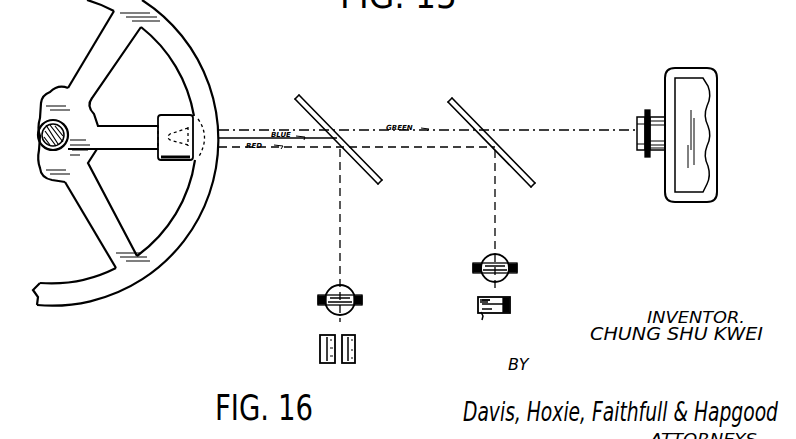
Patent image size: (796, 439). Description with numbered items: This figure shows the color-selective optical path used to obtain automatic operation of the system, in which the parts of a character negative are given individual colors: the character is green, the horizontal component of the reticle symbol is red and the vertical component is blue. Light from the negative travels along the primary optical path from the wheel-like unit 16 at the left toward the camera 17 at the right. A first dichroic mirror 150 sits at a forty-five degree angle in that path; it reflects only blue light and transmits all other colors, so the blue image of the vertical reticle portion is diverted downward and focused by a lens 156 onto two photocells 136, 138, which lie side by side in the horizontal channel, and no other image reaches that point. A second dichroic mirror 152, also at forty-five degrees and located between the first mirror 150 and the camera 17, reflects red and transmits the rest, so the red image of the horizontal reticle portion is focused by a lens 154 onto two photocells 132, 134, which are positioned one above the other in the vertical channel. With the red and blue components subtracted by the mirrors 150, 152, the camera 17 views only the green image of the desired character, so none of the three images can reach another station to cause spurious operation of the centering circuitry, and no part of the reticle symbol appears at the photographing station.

The steering wheel 16 is at (213, 16).
The camera 17 is at (660, 63).
The first dichroic mirror 150 is at (381, 182).
The second dichroic mirror 152 is at (534, 185).
The lens 154 is at (518, 268).
The lens 156 is at (318, 300).
The photocell 134 is at (510, 298).
The photocell 132 is at (483, 314).
The photocell 136 is at (320, 351).
The photocell 138 is at (358, 352).